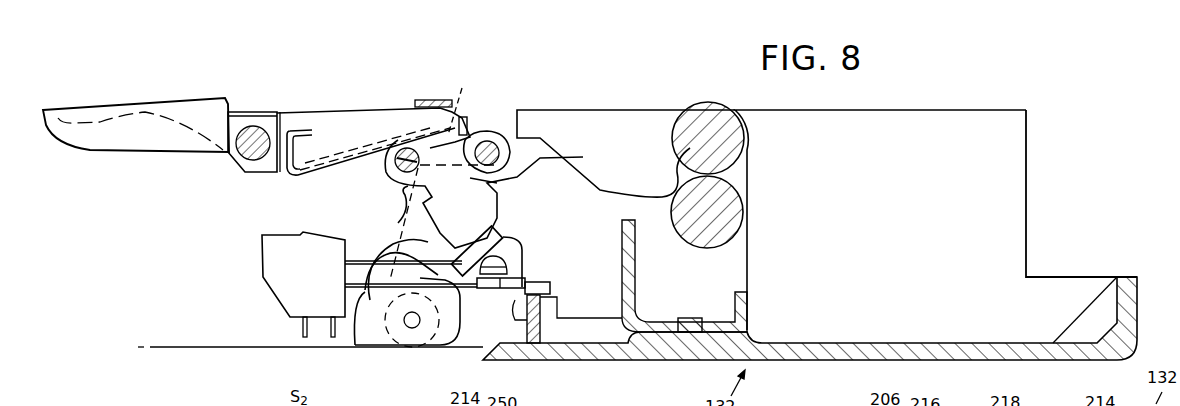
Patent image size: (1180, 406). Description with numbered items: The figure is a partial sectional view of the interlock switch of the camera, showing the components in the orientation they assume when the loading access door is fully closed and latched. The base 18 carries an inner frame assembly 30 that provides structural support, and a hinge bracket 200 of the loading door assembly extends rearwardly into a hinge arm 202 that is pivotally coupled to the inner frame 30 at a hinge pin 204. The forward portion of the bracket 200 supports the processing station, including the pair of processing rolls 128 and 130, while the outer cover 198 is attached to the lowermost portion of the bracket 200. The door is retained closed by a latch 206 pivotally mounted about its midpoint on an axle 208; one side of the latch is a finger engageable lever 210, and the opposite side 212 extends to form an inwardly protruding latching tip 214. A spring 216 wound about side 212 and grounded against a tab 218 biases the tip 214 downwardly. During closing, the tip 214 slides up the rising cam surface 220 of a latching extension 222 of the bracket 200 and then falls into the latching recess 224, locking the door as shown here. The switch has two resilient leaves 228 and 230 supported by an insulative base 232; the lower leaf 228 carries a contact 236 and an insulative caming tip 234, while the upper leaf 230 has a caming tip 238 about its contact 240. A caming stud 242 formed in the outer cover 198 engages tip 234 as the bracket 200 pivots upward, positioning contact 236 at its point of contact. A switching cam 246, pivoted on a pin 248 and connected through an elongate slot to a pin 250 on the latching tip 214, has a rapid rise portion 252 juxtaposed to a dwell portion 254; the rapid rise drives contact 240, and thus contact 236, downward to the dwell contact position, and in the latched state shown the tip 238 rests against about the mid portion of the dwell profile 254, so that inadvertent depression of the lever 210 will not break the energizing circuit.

The base 18 is at (240, 354).
The inner frame assembly 30 is at (290, 347).
The processing roll 128 is at (728, 112).
The processing roll 130 is at (735, 205).
The outer cover 198 is at (958, 343).
The hinge bracket 200 is at (748, 285).
The hinge arm 202 is at (458, 312).
The hinge pin 204 is at (412, 320).
The latch 206 is at (277, 105).
The axle 208 is at (250, 126).
The lever 210 is at (127, 106).
The side 212 is at (320, 140).
The latching tip 214 is at (487, 140).
The spring 216 is at (305, 145).
The tab 218 is at (422, 100).
The cam surface 220 is at (447, 101).
The latching extension 222 is at (548, 113).
The latching recess 224 is at (517, 120).
The lower leaf 228 is at (368, 300).
The upper leaf 230 is at (372, 240).
The insulative base 232 is at (268, 250).
The caming tip 234 is at (551, 285).
The contact 236 is at (515, 278).
The caming tip 238 is at (495, 243).
The contact 240 is at (500, 261).
The caming stud 242 is at (545, 314).
The switching cam 246 is at (600, 156).
The pin 248 is at (400, 150).
The pin 250 is at (503, 138).
The rapid rise portion 252 is at (415, 210).
The dwell portion 254 is at (505, 216).